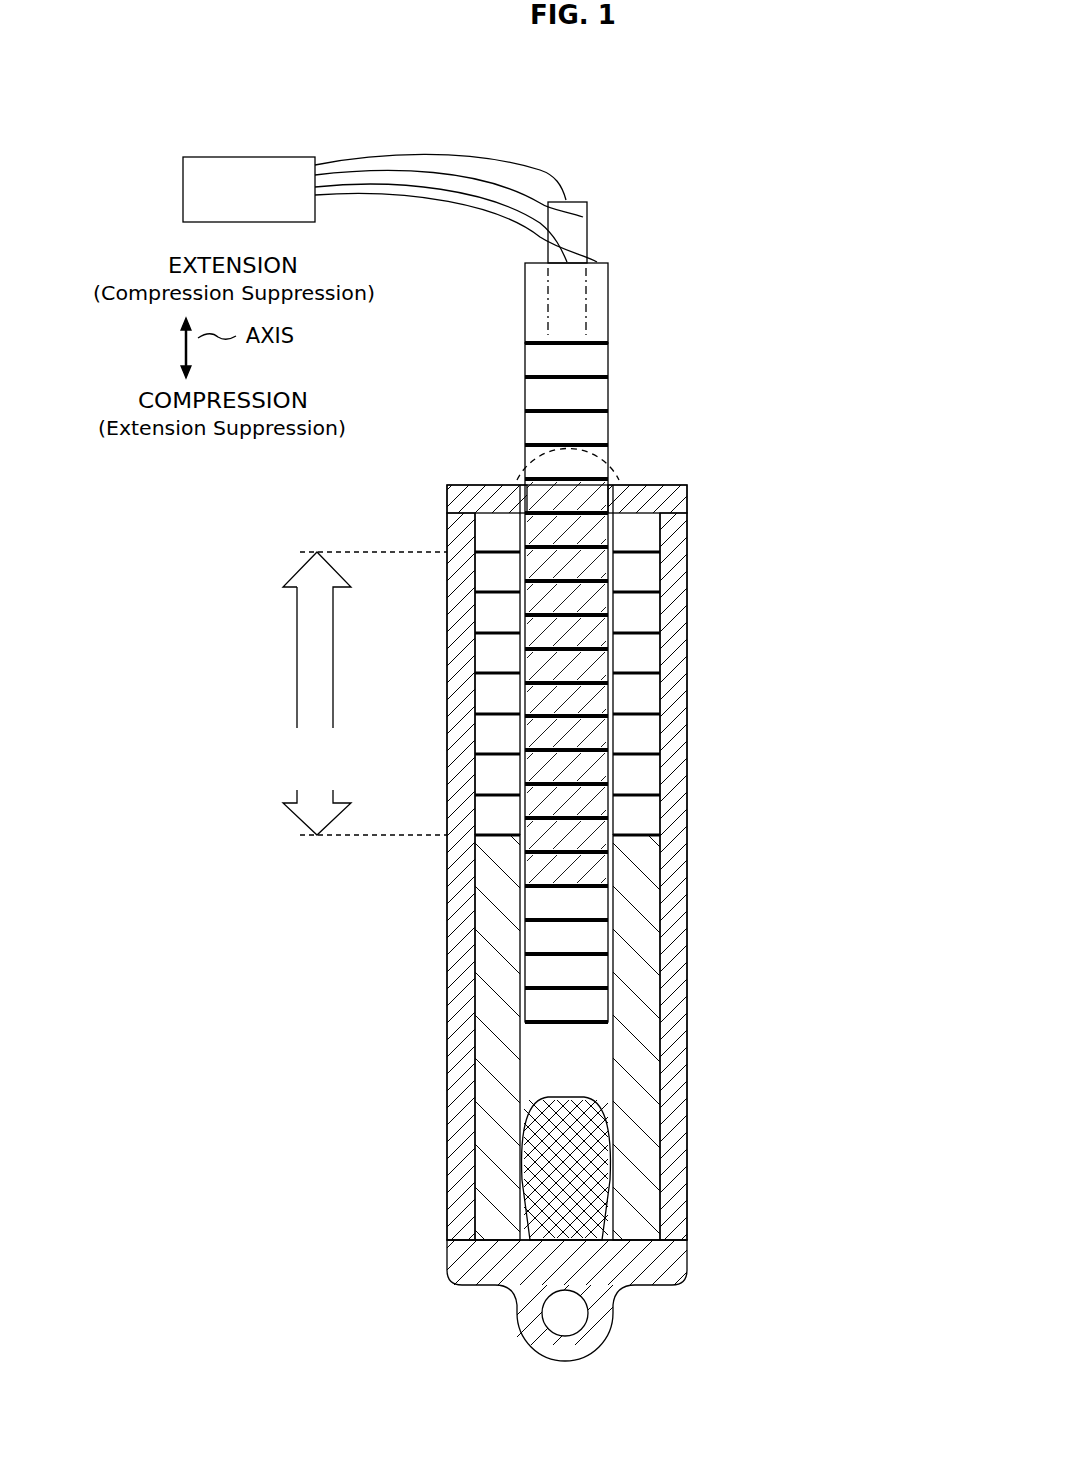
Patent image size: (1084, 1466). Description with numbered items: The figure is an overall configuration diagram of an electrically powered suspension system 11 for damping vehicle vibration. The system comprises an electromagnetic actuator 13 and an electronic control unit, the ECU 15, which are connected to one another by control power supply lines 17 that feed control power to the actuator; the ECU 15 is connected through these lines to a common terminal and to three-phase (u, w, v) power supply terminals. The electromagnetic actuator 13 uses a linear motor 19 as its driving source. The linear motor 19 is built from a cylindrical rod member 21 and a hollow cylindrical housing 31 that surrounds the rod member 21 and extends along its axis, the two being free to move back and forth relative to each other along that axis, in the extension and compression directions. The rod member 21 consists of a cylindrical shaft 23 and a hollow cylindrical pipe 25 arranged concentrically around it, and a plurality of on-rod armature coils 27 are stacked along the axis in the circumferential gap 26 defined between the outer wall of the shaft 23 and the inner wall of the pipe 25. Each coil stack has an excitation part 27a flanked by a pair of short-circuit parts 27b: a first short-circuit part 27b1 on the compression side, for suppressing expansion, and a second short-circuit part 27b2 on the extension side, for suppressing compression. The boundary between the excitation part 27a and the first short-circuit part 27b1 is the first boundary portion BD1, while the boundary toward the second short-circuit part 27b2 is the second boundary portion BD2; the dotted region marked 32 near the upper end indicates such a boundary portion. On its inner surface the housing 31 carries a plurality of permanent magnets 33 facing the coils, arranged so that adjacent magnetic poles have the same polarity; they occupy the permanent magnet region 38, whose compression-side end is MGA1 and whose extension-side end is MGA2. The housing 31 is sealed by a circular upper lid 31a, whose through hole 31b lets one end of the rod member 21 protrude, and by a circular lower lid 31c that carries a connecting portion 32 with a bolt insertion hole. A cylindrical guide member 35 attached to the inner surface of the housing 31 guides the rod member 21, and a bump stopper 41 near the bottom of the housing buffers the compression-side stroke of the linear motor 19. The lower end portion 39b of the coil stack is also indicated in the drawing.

The electrically powered suspension system 11 is at (782, 192).
The electromagnetic actuator 13 is at (678, 320).
The electronic control unit 15 is at (280, 157).
The control power supply lines 17 is at (427, 207).
The linear motor 19 is at (430, 868).
The rod member 21 is at (605, 223).
The shaft 23 is at (585, 217).
The pipe 25 is at (600, 283).
The circumferential gap 26 is at (599, 326).
The on-rod armature coils 27 is at (715, 682).
The excitation part 27a is at (687, 490).
The short-circuit part 27b is at (688, 682).
The first short-circuit part 27b1 is at (610, 888).
The second short-circuit part 27b2 is at (610, 343).
The housing 31 is at (455, 1148).
The upper lid 31a is at (465, 485).
The through hole 31b is at (508, 485).
The lower lid 31c is at (690, 1262).
The connecting portion 32 is at (622, 455).
The permanent magnets 33 is at (483, 653).
The guide member 35 is at (515, 1010).
The permanent magnet region 38 is at (297, 690).
The lower end portion 39b is at (543, 1030).
The bump stopper 41 is at (612, 1170).
The first boundary portion BD1 is at (520, 930).
The second boundary portion BD2 is at (527, 443).
The first end of permanent magnet region MGA1 is at (380, 835).
The second end of permanent magnet region MGA2 is at (380, 552).